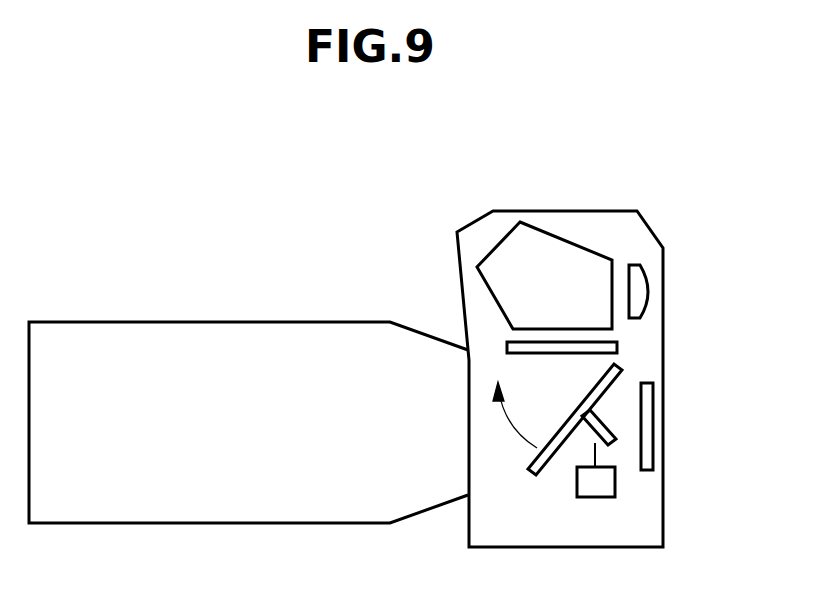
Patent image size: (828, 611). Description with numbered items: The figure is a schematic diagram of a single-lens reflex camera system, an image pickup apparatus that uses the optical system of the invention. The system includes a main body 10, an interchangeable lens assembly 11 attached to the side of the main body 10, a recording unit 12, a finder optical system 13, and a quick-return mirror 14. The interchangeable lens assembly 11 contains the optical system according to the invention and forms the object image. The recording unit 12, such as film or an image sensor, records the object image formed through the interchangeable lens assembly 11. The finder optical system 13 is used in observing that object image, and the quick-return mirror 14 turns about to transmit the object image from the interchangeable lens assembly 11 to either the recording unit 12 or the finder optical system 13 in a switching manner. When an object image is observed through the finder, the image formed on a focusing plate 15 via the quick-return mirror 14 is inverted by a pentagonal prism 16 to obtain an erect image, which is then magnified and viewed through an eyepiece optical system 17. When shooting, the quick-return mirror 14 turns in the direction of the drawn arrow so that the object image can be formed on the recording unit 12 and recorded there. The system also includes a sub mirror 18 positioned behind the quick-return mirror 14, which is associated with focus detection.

The main body 10 is at (628, 538).
The interchangeable lens assembly 11 is at (225, 510).
The recording unit 12 is at (653, 450).
The finder optical system 13 is at (680, 157).
The quick-return mirror 14 is at (547, 465).
The focusing plate 15 is at (535, 348).
The pentagonal prism 16 is at (570, 258).
The eyepiece optical system 17 is at (640, 277).
The sub mirror 18 is at (603, 422).